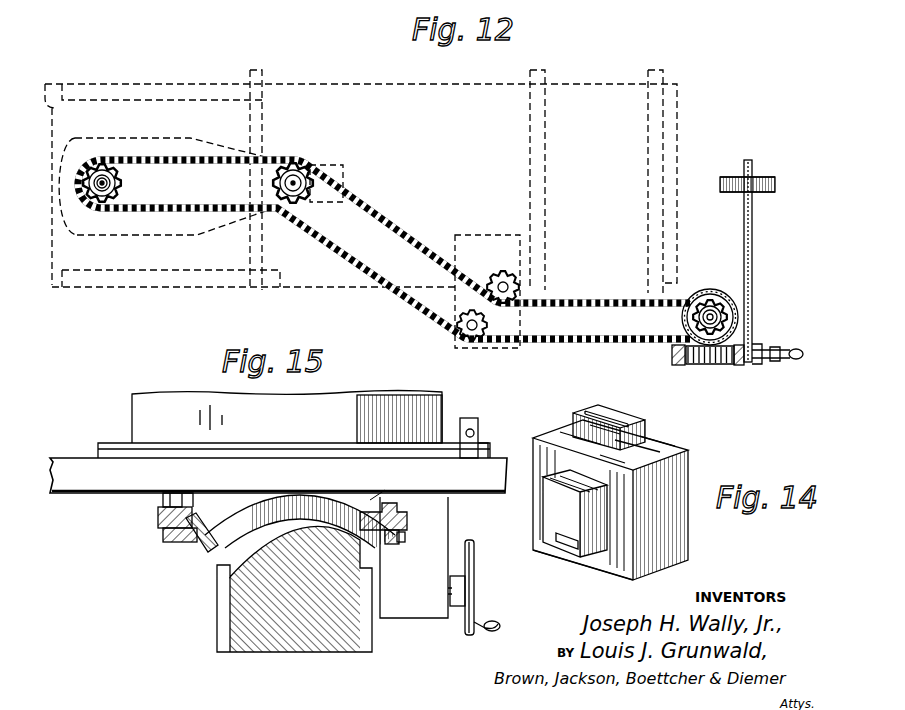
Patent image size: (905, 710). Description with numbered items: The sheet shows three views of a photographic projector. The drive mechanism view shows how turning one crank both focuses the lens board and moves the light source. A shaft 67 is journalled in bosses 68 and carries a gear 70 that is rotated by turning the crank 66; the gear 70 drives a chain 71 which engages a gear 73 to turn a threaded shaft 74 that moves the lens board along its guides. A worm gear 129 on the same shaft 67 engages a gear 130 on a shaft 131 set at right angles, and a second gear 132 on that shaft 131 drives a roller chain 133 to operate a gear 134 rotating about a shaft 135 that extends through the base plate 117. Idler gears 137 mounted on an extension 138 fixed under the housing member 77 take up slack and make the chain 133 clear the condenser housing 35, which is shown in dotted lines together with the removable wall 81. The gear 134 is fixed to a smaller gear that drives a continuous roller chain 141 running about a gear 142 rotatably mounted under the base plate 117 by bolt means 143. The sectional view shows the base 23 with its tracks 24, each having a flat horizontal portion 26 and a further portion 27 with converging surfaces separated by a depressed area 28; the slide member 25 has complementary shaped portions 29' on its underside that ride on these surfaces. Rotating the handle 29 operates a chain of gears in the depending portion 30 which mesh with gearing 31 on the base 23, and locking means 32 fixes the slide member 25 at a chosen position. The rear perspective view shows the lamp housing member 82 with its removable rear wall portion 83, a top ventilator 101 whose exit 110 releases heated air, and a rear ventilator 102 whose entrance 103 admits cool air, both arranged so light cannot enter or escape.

In FIG. 12, the removable wall 81 is at (247, 170).
In FIG. 12, the housing member 77 is at (345, 84).
In FIG. 12, the U-shaped housing member 35 is at (596, 94).
In FIG. 12, the base plate 117 is at (172, 140).
In FIG. 12, the continuous roller chain 141 is at (212, 208).
In FIG. 12, the roller chain 133 is at (417, 238).
In FIG. 12, the second gear 132 is at (680, 319).
In FIG. 12, the gear 142 is at (122, 184).
In FIG. 12, the bolt means 143 is at (103, 190).
In FIG. 12, the shaft 135 is at (297, 178).
In FIG. 12, the gear 134 is at (314, 199).
In FIG. 12, the idler gears 137 is at (500, 277).
In FIG. 12, the extension 138 is at (455, 342).
In FIG. 12, the gear 130 is at (703, 289).
In FIG. 12, the shaft 131 is at (714, 308).
In FIG. 12, the worm gear 129 is at (702, 366).
In FIG. 12, the bosses 68 is at (740, 366).
In FIG. 12, the chain 71 is at (754, 230).
In FIG. 12, the gear 73 is at (752, 165).
In FIG. 12, the shaft 74 is at (773, 182).
In FIG. 12, the shaft 67 is at (765, 346).
In FIG. 12, the crank 66 is at (799, 348).
In FIG. 12, the gear 70 is at (760, 360).
In FIG. 15, the slide member 25 is at (65, 494).
In FIG. 15, the locking means 32 is at (476, 418).
In FIG. 15, the complementary shaped portions 29' is at (306, 478).
In FIG. 15, the tracks 24 is at (282, 514).
In FIG. 15, the base 23 is at (217, 626).
In FIG. 15, the flat horizontal portion 26 is at (176, 542).
In FIG. 15, the depressed area 28 is at (197, 548).
In FIG. 15, the further portion 27 is at (248, 528).
In FIG. 15, the gearing 31 is at (406, 537).
In FIG. 15, the depending portion 30 is at (420, 618).
In FIG. 15, the handle 29 is at (475, 598).
In FIG. 14, the housing member 82 is at (683, 463).
In FIG. 14, the ventilator 101 is at (610, 410).
In FIG. 14, the exit 110 is at (588, 410).
In FIG. 14, the ventilator 102 is at (548, 515).
In FIG. 14, the entrance 103 is at (567, 550).
In FIG. 14, the removable rear wall portion 83 is at (616, 572).